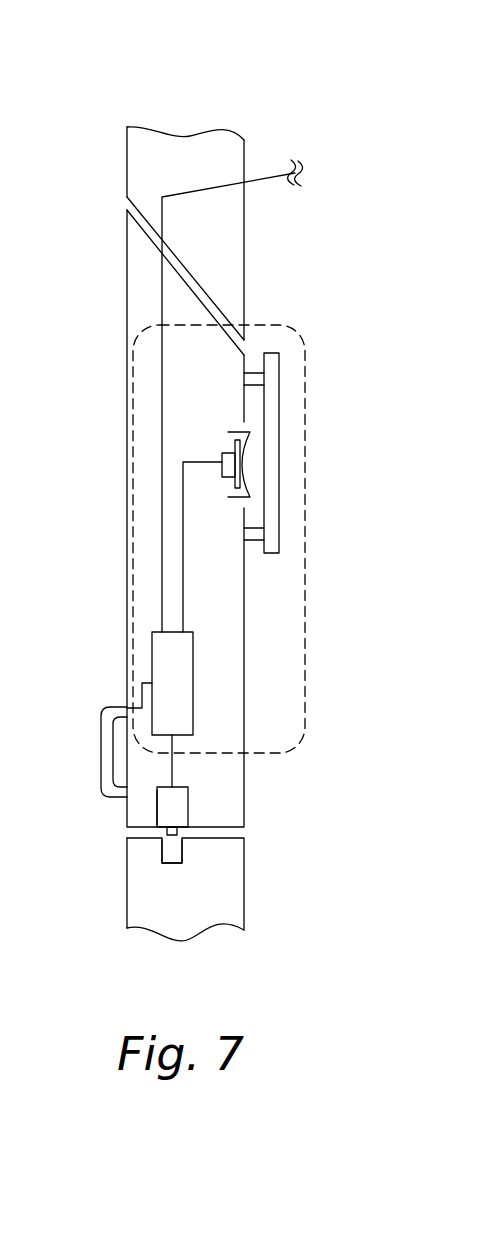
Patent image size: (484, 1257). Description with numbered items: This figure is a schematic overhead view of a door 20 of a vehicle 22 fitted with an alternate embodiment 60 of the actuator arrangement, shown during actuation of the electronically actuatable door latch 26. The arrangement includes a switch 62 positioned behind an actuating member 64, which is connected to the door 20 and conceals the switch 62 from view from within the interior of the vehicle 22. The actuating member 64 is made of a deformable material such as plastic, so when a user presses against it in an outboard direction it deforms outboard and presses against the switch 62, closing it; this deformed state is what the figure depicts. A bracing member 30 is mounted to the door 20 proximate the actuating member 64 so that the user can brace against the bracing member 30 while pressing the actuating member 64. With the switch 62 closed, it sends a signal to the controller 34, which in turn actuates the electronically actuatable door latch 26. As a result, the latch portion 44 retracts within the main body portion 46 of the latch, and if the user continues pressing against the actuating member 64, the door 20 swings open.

The vehicle 22 is at (299, 89).
The door 20 is at (126, 327).
The alternate embodiment of the actuator arrangement 60 is at (308, 572).
The bracing member 30 is at (274, 421).
The switch 62 is at (221, 454).
The actuating member 64 is at (245, 485).
The controller 34 is at (163, 653).
The main body portion 46 is at (181, 805).
The electronically actuatable door latch 26 is at (155, 813).
The latch portion 44 is at (175, 838).